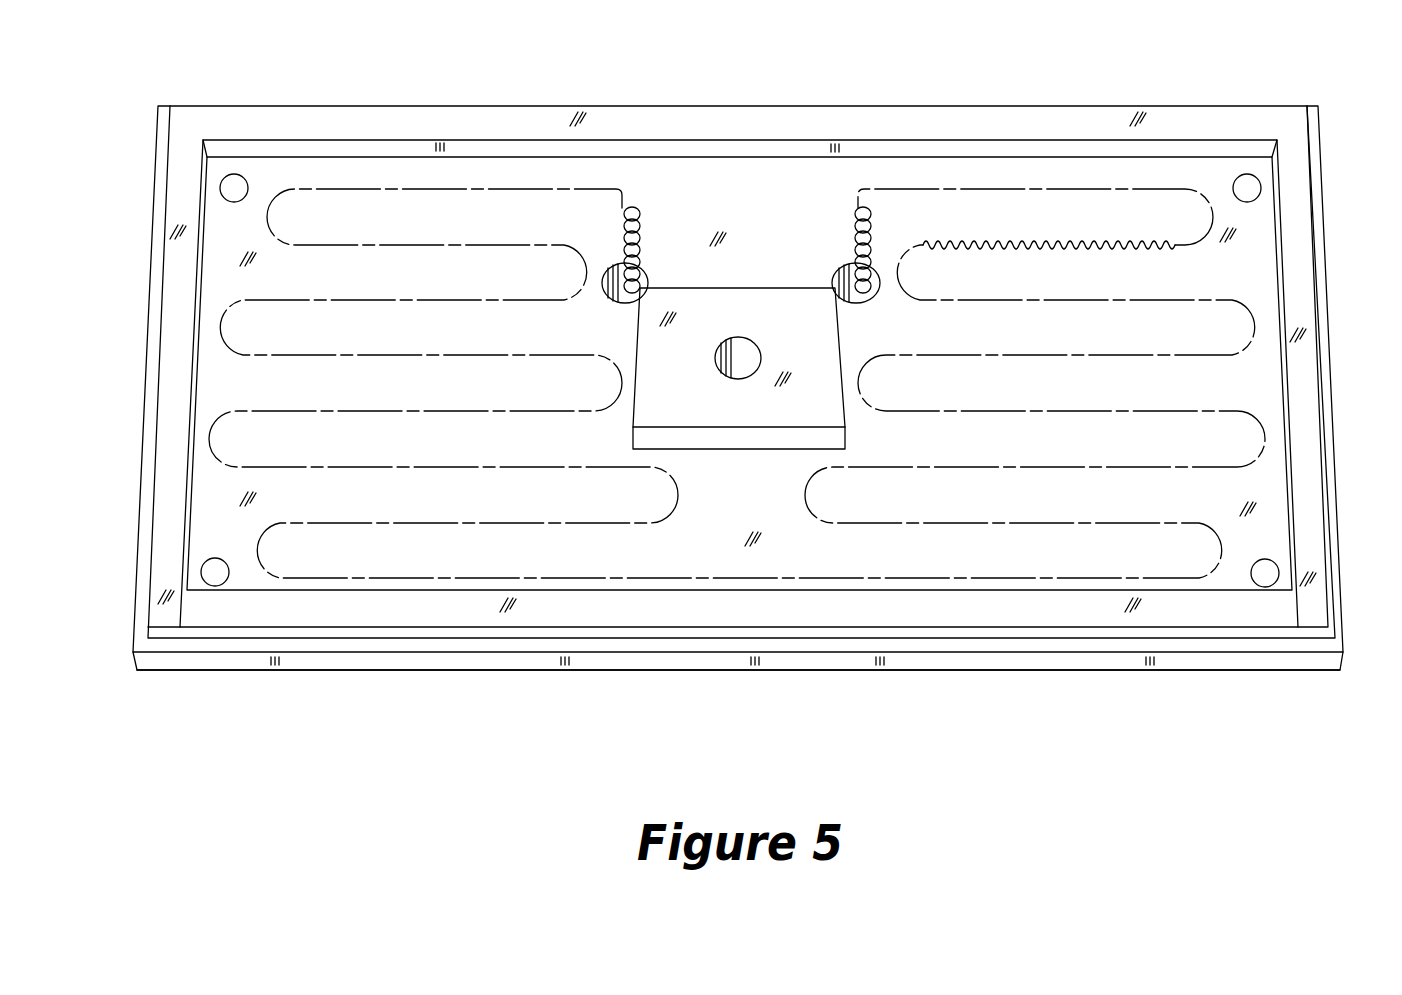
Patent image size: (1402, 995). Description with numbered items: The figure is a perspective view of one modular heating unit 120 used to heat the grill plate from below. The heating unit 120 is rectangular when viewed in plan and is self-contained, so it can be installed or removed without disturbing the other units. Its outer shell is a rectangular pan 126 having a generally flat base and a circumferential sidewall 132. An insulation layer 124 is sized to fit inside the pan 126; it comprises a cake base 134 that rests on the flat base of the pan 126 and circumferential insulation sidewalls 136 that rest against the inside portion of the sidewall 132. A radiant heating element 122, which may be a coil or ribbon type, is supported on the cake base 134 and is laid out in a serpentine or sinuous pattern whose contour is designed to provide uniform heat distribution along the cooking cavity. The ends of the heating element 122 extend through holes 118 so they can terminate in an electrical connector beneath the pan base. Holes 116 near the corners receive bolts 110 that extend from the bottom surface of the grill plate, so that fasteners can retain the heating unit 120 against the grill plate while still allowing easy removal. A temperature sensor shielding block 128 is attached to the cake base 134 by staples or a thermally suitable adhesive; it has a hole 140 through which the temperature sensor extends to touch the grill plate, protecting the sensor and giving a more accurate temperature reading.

The bolts 110 is at (643, 280).
The holes 116 is at (234, 174).
The holes 118 is at (836, 280).
The heating unit 120 is at (872, 92).
The heating element 122 is at (370, 240).
The insulation layer 124 is at (748, 196).
The pan 126 is at (1345, 662).
The sensor shielding block 128 is at (705, 437).
The circumferential sidewall 132 is at (450, 663).
The cake base 134 is at (1250, 268).
The insulation sidewalls 136 is at (498, 125).
The hole 140 is at (745, 380).